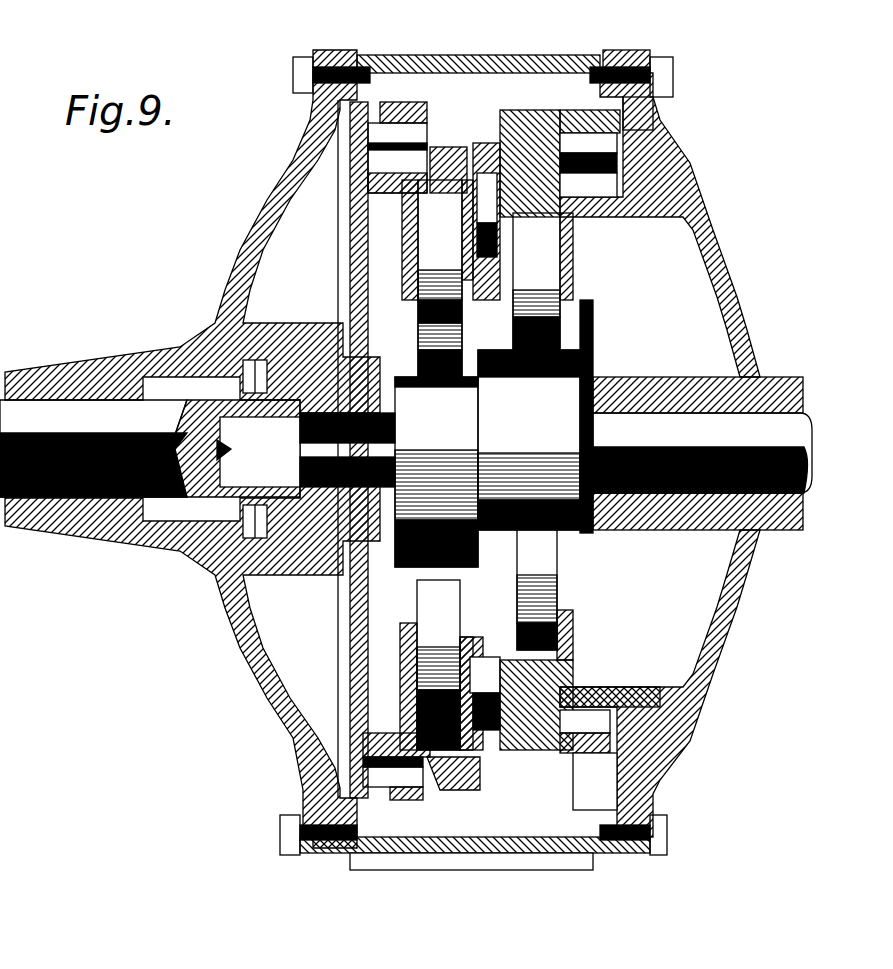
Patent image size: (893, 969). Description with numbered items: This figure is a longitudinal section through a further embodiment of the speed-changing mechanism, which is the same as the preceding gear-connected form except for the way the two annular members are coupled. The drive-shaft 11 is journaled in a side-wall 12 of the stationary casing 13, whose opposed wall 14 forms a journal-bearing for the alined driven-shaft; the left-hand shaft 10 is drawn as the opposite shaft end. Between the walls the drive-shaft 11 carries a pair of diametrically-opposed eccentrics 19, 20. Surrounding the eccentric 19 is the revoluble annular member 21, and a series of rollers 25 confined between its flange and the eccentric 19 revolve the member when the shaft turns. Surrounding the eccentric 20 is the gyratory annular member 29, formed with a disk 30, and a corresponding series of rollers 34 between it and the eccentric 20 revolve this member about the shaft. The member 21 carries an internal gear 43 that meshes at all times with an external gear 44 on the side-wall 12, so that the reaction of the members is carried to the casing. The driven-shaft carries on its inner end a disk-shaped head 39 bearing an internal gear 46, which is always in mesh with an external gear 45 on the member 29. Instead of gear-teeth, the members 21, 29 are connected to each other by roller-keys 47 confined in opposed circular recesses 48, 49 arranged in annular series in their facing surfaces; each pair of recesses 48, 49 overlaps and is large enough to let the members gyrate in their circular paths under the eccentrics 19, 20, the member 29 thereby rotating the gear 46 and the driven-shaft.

The input shaft 10 is at (93, 448).
The drive-shaft 11 is at (556, 453).
The side-wall 12 is at (692, 172).
The stationary casing 13 is at (490, 57).
The opposed wall 14 is at (236, 265).
The eccentric 19 is at (535, 416).
The eccentric 20 is at (436, 472).
The revoluble annular member 21 is at (543, 110).
The rollers 25 is at (543, 263).
The gyratory annular member 29 is at (466, 152).
The disk 30 is at (464, 230).
The rollers 34 is at (439, 465).
The disk-shaped head 39 is at (405, 258).
The internal gear 43 is at (641, 130).
The external gear 44 is at (613, 183).
The external gear 45 is at (353, 175).
The internal gear 46 is at (413, 100).
The roller-keys 47 is at (476, 143).
The circular recesses 48 is at (476, 770).
The circular recesses 49 is at (481, 172).